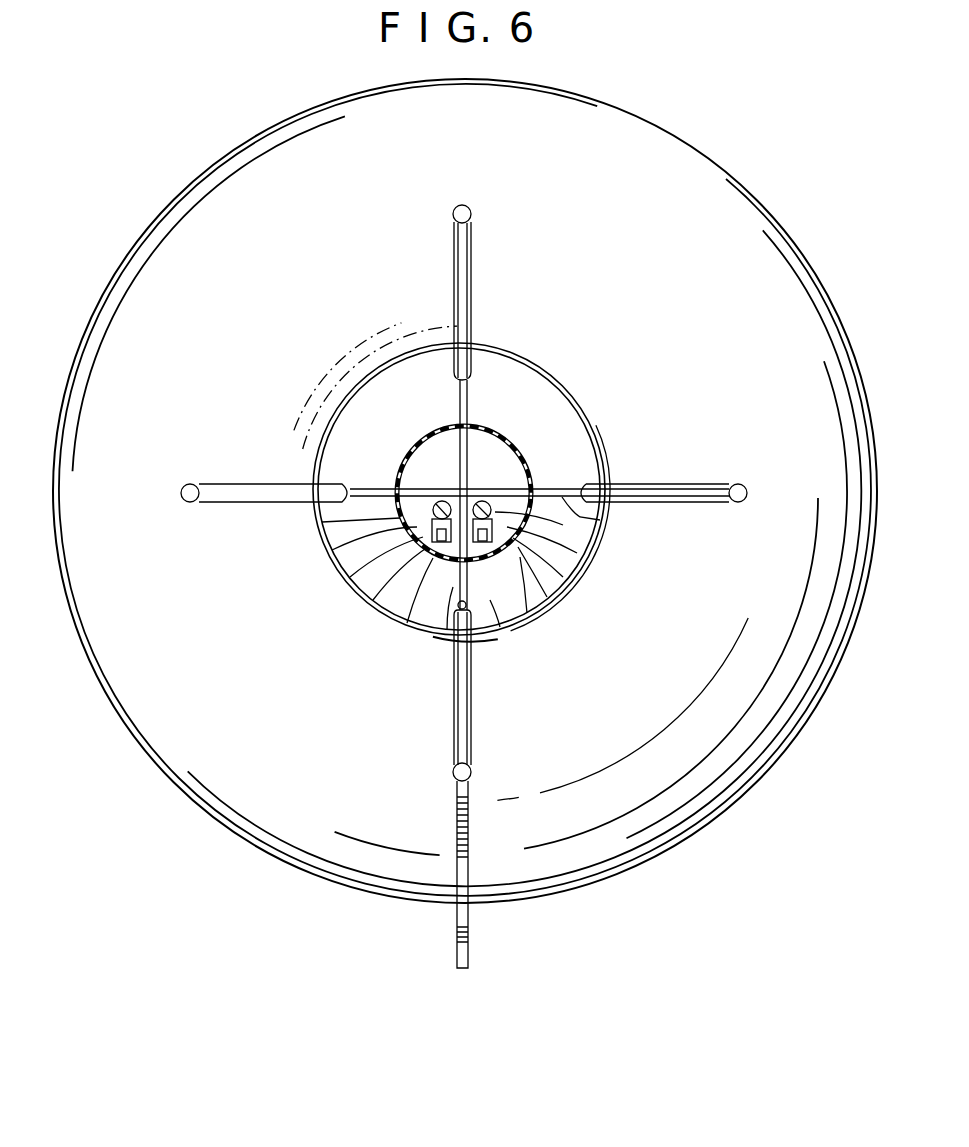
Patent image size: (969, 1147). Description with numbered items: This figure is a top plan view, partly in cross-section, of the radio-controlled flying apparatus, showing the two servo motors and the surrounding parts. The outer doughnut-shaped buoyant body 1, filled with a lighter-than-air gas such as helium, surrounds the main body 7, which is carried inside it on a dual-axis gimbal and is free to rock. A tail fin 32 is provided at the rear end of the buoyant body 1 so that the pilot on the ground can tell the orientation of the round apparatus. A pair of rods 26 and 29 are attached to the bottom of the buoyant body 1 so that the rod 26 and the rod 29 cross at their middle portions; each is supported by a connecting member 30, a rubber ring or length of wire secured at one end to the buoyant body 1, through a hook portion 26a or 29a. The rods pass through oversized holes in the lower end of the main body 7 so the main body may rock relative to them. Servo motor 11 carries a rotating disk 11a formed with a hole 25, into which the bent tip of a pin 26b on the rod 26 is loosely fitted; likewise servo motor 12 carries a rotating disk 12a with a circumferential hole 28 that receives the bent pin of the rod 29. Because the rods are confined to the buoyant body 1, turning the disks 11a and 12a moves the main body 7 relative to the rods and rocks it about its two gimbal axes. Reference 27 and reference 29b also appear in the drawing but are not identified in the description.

The buoyant body 1 is at (727, 212).
The main body 7 is at (515, 453).
The servo motor 11 is at (566, 592).
The rotating disk 11a is at (586, 572).
The servo motor 12 is at (378, 598).
The rotating disk 12a is at (355, 582).
The hole 25 is at (601, 549).
The rod 26 is at (447, 600).
The hook portion 26a is at (455, 380).
The pin 26b is at (517, 623).
The vertical arm 27 is at (458, 276).
The hole 28 is at (333, 547).
The rod 29 is at (600, 520).
The hook portion 29a is at (595, 448).
The vane 29b is at (333, 527).
The connecting member 30 is at (250, 485).
The tail fin 32 is at (455, 945).